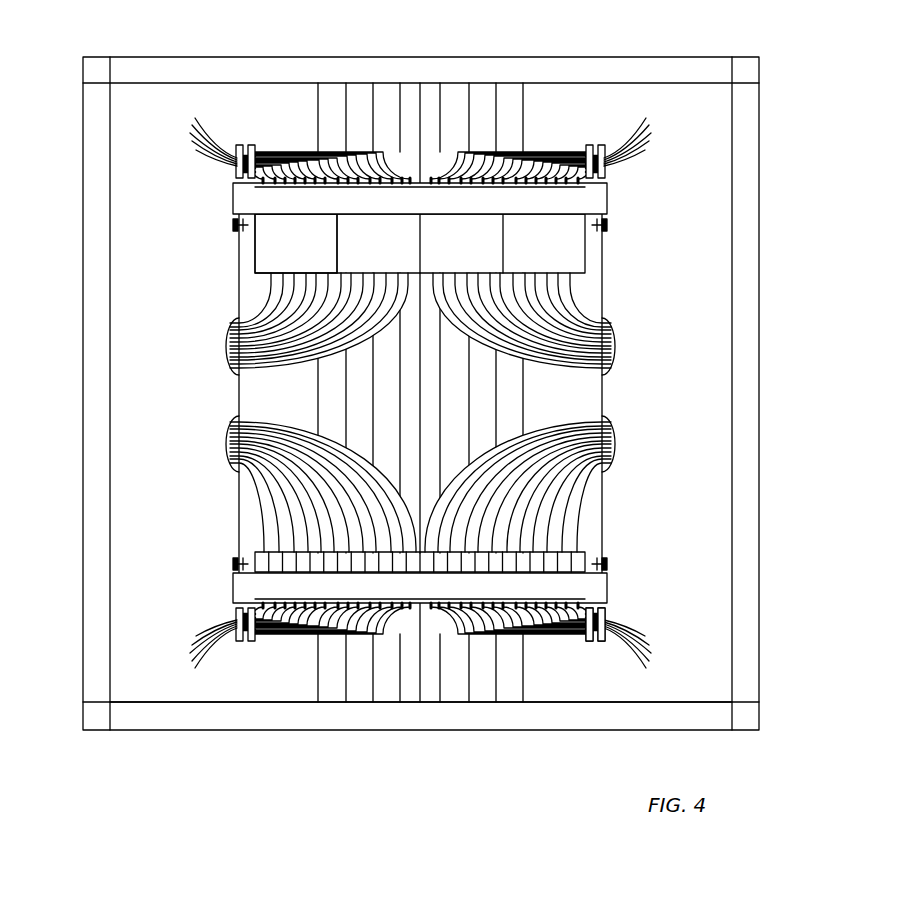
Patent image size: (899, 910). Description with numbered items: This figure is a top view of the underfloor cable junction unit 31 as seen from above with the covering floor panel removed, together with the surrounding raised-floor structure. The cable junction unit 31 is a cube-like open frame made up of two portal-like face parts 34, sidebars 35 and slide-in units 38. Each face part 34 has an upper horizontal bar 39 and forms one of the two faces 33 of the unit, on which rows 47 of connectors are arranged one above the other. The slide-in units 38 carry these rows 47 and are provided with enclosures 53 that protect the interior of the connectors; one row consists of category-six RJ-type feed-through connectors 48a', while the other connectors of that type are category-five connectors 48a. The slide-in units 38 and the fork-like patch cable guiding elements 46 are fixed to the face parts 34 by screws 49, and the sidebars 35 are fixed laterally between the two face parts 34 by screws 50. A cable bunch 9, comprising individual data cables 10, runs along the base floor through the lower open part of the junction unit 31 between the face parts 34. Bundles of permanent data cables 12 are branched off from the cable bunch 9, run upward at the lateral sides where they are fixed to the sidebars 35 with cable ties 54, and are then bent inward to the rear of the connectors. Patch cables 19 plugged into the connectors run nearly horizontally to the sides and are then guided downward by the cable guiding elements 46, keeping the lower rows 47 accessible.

The underfloor cable junction unit 31 is at (664, 210).
The cable bunch 9 is at (449, 142).
The data cable 10 is at (257, 313).
The bundle of permanent data cables 12 is at (233, 348).
The slide-in unit 38 is at (545, 245).
The enclosure 53 is at (305, 251).
The cable tie 54 is at (233, 440).
The sidebar 35 is at (245, 525).
The face part 34 is at (245, 198).
The screw 50 is at (233, 565).
The upper horizontal bar 39 is at (288, 593).
The patch cable 19 is at (300, 152).
The RJ45 Category 5 connector 48a is at (521, 105).
The row of connectors 47 is at (325, 612).
The RJ45 Category 6 feed-through connector 48a' is at (523, 688).
The patch cable guiding element 46 is at (588, 647).
The face 33 is at (365, 740).
The screw 49 is at (388, 903).